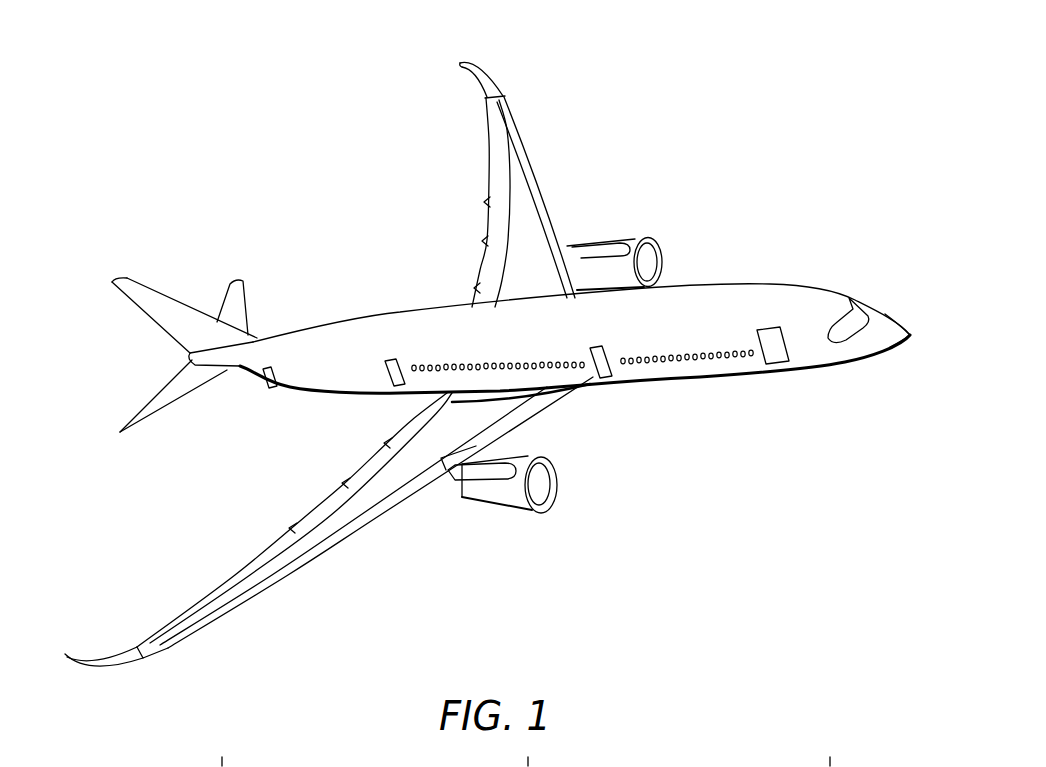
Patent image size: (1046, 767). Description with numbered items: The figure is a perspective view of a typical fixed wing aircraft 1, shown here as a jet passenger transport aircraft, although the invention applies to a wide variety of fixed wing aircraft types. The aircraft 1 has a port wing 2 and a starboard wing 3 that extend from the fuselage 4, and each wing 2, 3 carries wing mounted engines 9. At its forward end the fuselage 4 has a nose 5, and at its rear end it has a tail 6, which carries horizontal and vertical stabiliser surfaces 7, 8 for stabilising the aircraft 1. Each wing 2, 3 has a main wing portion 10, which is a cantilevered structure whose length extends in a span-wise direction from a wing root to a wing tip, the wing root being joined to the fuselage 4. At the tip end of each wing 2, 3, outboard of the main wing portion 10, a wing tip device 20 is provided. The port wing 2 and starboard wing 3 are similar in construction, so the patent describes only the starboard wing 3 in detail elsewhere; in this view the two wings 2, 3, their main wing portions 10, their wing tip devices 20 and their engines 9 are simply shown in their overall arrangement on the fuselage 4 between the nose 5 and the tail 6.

The fixed wing aircraft 1 is at (740, 134).
The port wing 2 is at (522, 190).
The starboard wing 3 is at (355, 506).
The fuselage 4 is at (423, 340).
The nose 5 is at (905, 333).
The tail 6 is at (190, 355).
The horizontal stabiliser surface 7 is at (237, 302).
The vertical stabiliser surface 8 is at (145, 292).
The wing mounted engine 9 is at (648, 260).
The main wing portion 10 is at (521, 218).
The wing tip device 20 is at (487, 80).